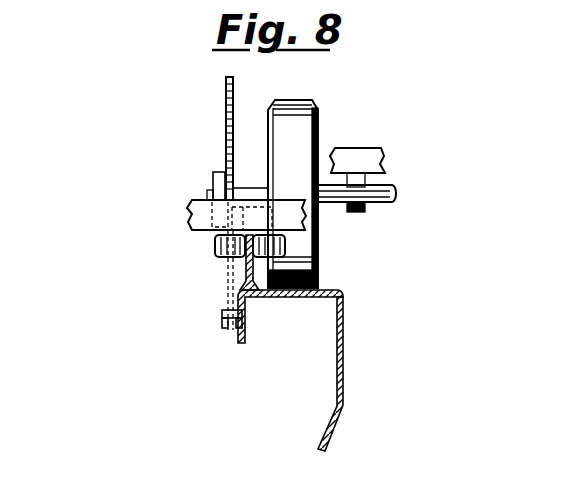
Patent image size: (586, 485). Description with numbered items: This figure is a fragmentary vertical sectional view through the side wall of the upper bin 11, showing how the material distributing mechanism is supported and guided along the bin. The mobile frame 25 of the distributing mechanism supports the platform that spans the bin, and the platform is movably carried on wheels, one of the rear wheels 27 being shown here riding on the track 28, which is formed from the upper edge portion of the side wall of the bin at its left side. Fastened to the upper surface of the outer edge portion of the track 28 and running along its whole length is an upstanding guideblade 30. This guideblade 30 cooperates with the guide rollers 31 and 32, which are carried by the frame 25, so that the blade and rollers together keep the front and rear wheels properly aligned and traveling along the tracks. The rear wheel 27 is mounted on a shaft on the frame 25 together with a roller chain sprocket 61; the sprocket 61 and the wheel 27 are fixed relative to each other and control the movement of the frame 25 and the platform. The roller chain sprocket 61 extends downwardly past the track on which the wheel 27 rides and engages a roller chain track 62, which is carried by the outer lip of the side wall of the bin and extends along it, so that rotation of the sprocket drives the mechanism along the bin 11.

The upper bin 11 is at (344, 362).
The mobile frame 25 is at (358, 150).
The rear wheel 27 is at (303, 101).
The track 28 is at (318, 299).
The guideblade 30 is at (248, 275).
The guide roller 31 is at (216, 250).
The guide roller 32 is at (287, 246).
The roller chain sprocket 61 is at (226, 117).
The roller chain track 62 is at (224, 320).